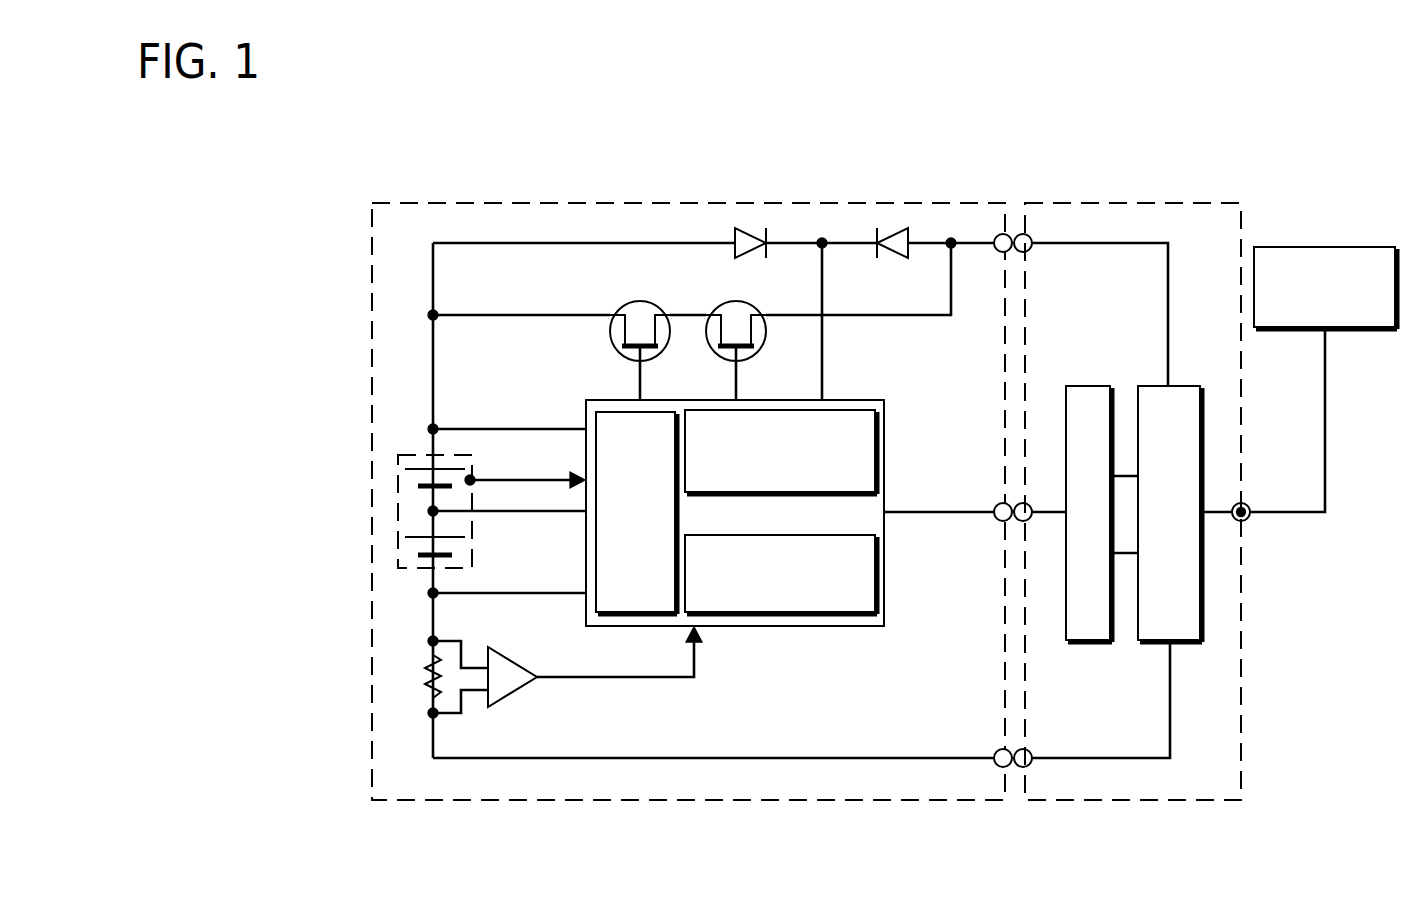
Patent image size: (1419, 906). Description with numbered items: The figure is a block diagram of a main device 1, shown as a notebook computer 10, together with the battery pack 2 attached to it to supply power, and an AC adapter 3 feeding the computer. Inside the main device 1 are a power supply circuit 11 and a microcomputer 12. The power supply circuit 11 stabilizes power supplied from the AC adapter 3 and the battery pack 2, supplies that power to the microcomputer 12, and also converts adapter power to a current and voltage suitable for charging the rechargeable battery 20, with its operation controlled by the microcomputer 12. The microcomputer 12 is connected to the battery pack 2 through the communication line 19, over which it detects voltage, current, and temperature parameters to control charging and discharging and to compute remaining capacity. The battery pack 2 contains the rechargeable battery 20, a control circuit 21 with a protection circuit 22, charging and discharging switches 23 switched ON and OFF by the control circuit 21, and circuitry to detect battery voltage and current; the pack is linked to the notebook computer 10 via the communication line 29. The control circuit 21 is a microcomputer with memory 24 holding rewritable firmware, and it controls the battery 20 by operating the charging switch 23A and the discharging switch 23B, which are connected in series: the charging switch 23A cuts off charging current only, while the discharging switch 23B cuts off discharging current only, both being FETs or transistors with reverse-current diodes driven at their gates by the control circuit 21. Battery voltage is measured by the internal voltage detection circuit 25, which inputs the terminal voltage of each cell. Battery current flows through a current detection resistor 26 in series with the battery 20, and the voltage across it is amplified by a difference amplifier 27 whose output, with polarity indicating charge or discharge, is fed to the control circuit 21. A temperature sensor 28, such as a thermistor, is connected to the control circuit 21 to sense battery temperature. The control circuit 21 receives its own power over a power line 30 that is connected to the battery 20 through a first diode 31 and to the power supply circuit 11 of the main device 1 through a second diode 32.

The main device 1 is at (1051, 484).
The notebook computer 10 is at (1130, 203).
The battery pack 2 is at (490, 203).
The AC adapter 3 is at (1295, 247).
The power supply circuit 11 is at (1180, 642).
The microcomputer 12 is at (1087, 642).
The communication line 19 is at (1040, 513).
The rechargeable battery 20 is at (398, 493).
The control circuit 21 is at (793, 573).
The protection circuit 22 is at (877, 452).
The charging and discharging switches 23 is at (695, 130).
The charging switch 23A is at (736, 300).
The discharging switch 23B is at (640, 300).
The memory 24 is at (877, 573).
The voltage detection circuit 25 is at (676, 515).
The current detection resistor 26 is at (425, 660).
The difference amplifier 27 is at (513, 695).
The temperature sensor 28 is at (472, 478).
The communication line 29 is at (938, 513).
The power line 30 is at (822, 350).
The first diode 31 is at (750, 232).
The second diode 32 is at (893, 232).